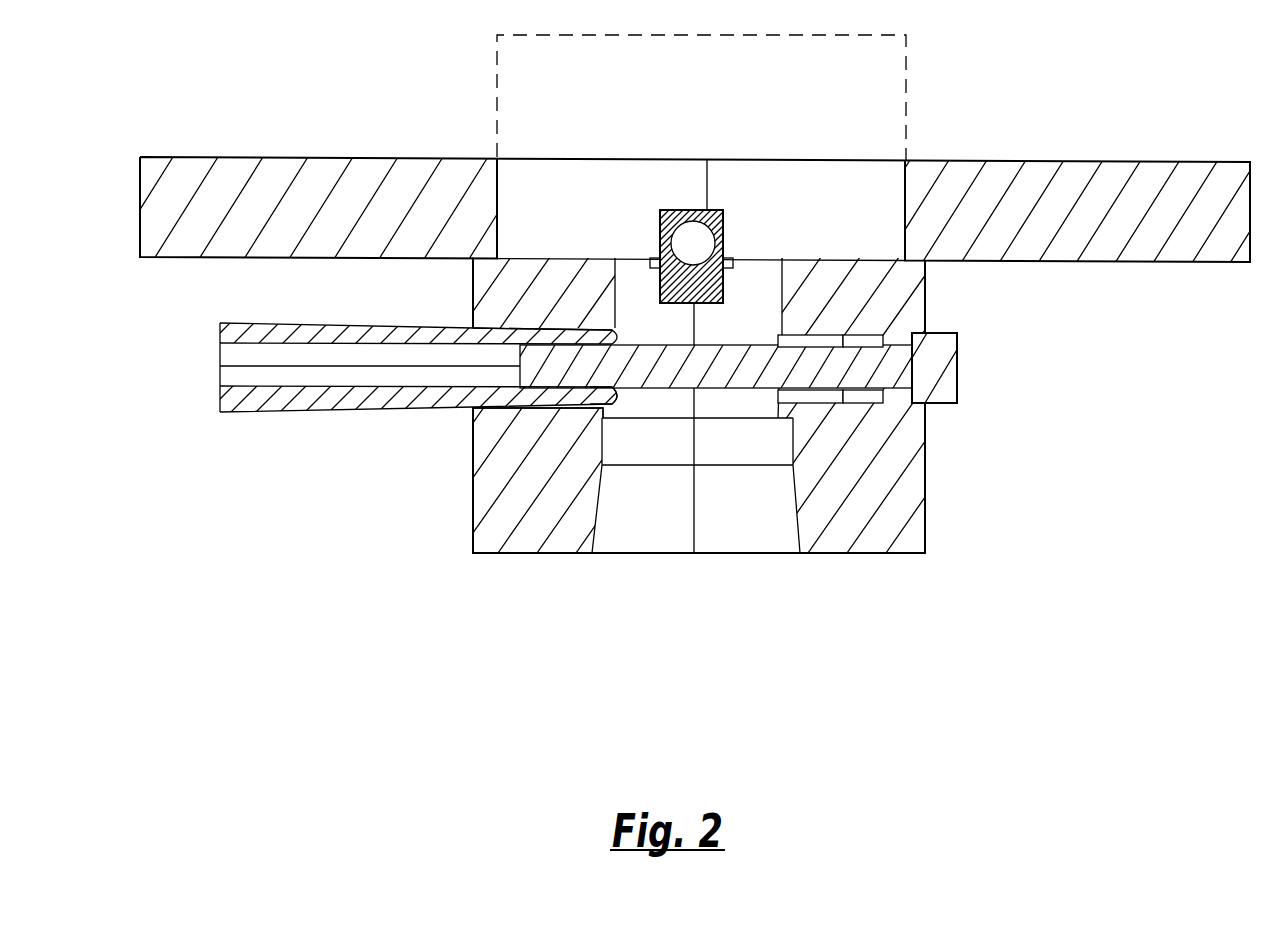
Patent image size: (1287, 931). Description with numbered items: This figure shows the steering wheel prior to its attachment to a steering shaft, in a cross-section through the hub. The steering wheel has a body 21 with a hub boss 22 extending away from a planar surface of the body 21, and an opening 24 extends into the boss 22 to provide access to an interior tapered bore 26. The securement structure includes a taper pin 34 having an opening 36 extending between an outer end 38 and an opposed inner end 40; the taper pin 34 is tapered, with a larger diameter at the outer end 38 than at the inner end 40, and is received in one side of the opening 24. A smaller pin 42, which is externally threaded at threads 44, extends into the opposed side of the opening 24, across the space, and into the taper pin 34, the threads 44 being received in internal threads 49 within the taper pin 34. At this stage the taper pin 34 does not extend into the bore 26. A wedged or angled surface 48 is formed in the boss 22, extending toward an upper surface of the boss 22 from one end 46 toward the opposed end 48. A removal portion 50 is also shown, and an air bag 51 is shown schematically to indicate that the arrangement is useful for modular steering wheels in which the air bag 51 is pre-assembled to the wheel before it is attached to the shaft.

The body 21 is at (965, 178).
The hub boss 22 is at (495, 540).
The opening 24 is at (471, 407).
The interior tapered bore 26 is at (598, 517).
The taper pin 34 is at (219, 381).
The opening 36 is at (273, 385).
The outer end 38 is at (223, 330).
The inner end 40 is at (617, 345).
The pin 42 is at (935, 376).
The threads 44 is at (797, 352).
The end 46 is at (478, 329).
The wedged or angled surface 48 is at (617, 408).
The internal threads 49 is at (317, 385).
The removal portion 50 is at (662, 228).
The air bag 51 is at (816, 109).